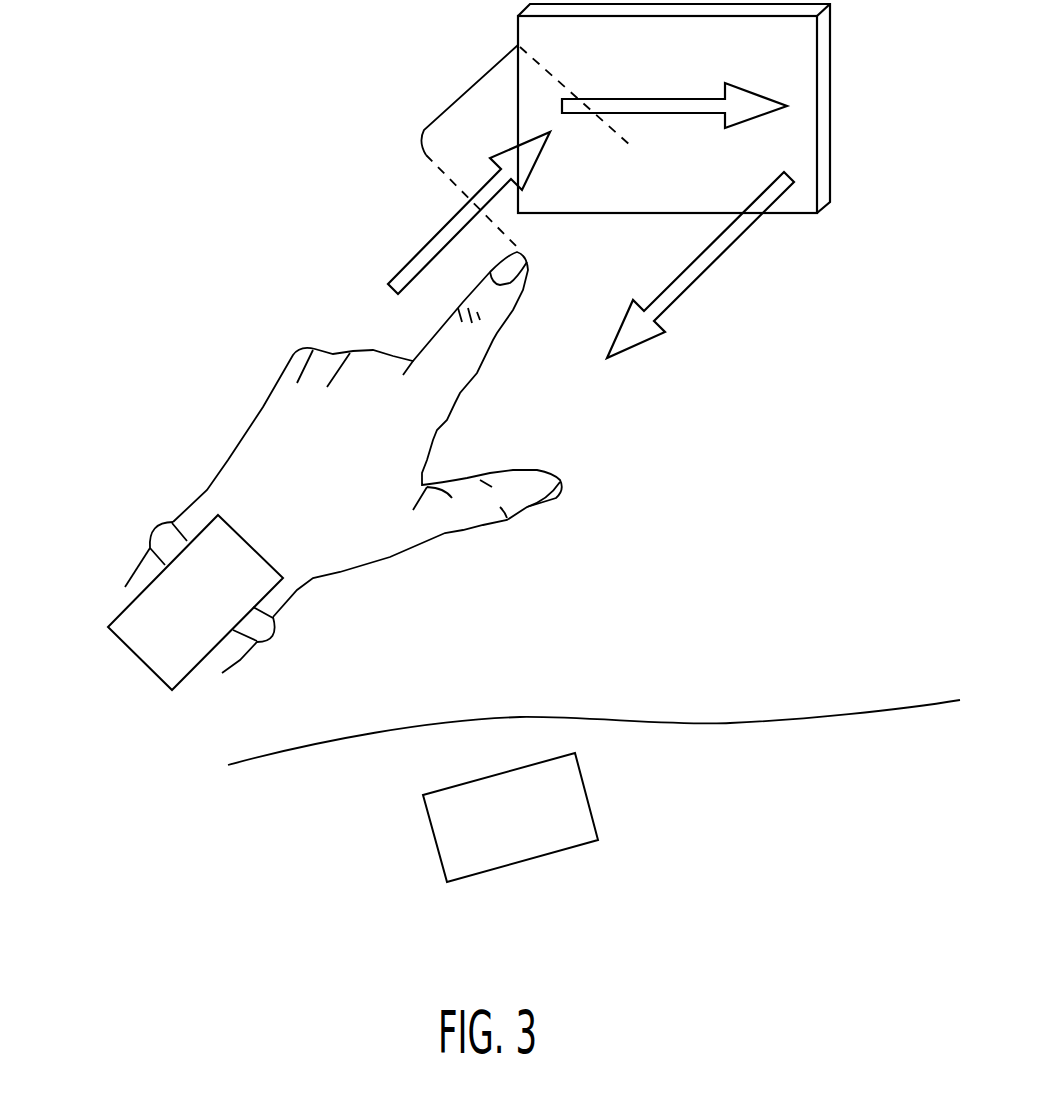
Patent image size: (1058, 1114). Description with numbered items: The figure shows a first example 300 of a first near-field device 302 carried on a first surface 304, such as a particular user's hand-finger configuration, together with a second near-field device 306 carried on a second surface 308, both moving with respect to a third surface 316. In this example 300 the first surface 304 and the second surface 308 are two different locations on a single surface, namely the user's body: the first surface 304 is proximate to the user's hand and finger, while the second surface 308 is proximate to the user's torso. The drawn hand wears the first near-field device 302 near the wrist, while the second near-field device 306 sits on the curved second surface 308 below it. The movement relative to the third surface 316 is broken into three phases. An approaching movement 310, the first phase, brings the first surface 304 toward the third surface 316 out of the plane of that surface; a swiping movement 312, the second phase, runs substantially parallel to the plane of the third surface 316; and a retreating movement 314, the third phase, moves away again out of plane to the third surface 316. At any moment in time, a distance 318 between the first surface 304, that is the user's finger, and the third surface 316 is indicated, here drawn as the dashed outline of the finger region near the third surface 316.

The first example 300 is at (178, 60).
The first near-field device 302 is at (157, 667).
The first surface 304 is at (273, 407).
The second near-field device 306 is at (447, 838).
The second surface 308 is at (760, 720).
The approaching (phase 1) 310 is at (413, 266).
The swiping (phase 2) 312 is at (687, 114).
The retreating (phase 3) 314 is at (752, 226).
The third surface 316 is at (833, 113).
The distance 318 is at (474, 92).